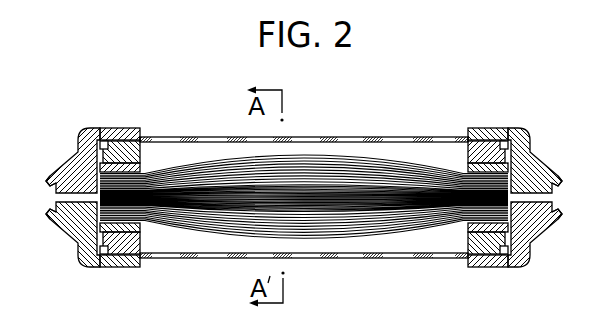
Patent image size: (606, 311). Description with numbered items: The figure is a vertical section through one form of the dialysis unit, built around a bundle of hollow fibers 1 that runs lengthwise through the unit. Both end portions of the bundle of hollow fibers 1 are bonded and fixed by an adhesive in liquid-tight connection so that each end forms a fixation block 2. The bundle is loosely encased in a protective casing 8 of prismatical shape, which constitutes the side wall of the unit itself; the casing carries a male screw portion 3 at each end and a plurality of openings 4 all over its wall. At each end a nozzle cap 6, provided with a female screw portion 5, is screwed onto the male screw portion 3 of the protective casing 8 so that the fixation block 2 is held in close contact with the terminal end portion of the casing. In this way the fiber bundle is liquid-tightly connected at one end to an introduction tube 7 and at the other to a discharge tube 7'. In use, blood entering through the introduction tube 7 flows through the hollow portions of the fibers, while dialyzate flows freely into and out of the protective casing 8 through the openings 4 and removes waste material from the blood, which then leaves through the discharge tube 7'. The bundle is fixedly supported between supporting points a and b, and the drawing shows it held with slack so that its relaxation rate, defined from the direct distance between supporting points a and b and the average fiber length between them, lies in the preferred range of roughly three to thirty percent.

The bundle of hollow fibers 1 is at (379, 170).
The fixation block 2 is at (96, 158).
The male screw portion 3 is at (118, 128).
The openings 4 is at (436, 137).
The female screw portion 5 is at (125, 258).
The nozzle cap 6 is at (80, 243).
The introduction tube 7 is at (573, 207).
The discharge tube 7' is at (38, 211).
The protective casing 8 is at (330, 137).
The supporting point a is at (141, 137).
The supporting point b is at (467, 137).